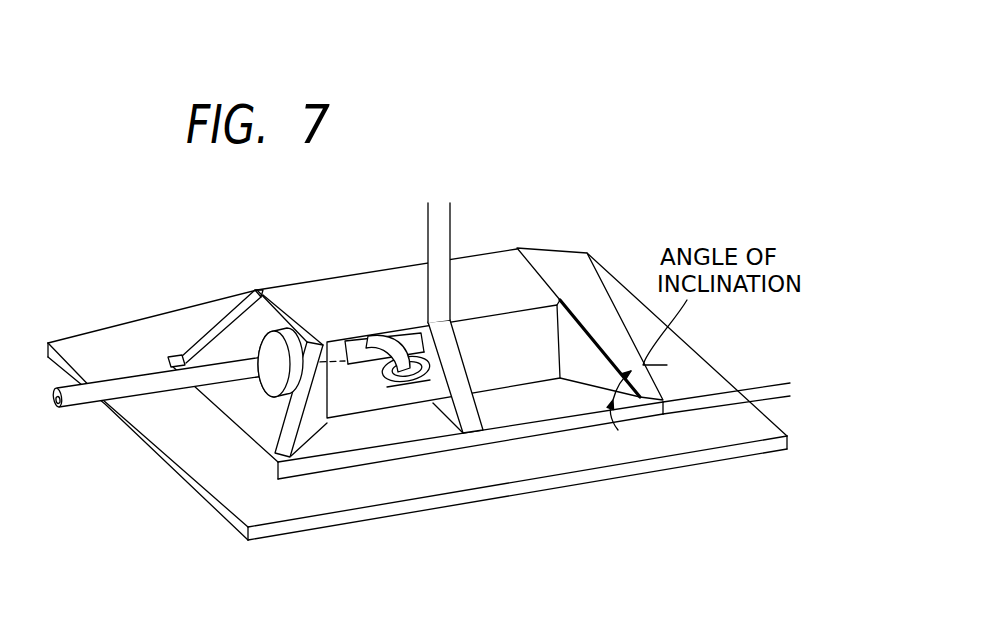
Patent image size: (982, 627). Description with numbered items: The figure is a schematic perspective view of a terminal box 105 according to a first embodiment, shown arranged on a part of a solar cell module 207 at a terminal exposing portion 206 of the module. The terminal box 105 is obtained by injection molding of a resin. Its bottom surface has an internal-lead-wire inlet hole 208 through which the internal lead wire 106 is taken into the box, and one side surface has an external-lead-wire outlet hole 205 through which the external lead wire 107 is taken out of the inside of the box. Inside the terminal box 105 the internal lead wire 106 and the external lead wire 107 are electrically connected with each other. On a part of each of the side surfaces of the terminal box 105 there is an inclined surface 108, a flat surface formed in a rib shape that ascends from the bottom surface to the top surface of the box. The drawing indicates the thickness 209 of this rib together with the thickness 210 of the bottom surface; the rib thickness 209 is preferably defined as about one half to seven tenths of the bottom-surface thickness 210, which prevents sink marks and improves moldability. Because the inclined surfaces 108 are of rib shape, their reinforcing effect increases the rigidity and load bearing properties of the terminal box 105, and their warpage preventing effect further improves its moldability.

The terminal box 105 is at (497, 253).
The internal lead wire 106 is at (392, 353).
The external lead wire 107 is at (155, 372).
The inclined surface 108 is at (607, 350).
The external-lead-wire outlet hole 205 is at (263, 330).
The terminal exposing portion 206 is at (430, 393).
The part of a solar cell module 207 is at (223, 495).
The internal-lead-wire inlet hole 208 is at (385, 380).
The thickness of the rib 209 is at (397, 222).
The thickness of the bottom surface 210 is at (779, 421).